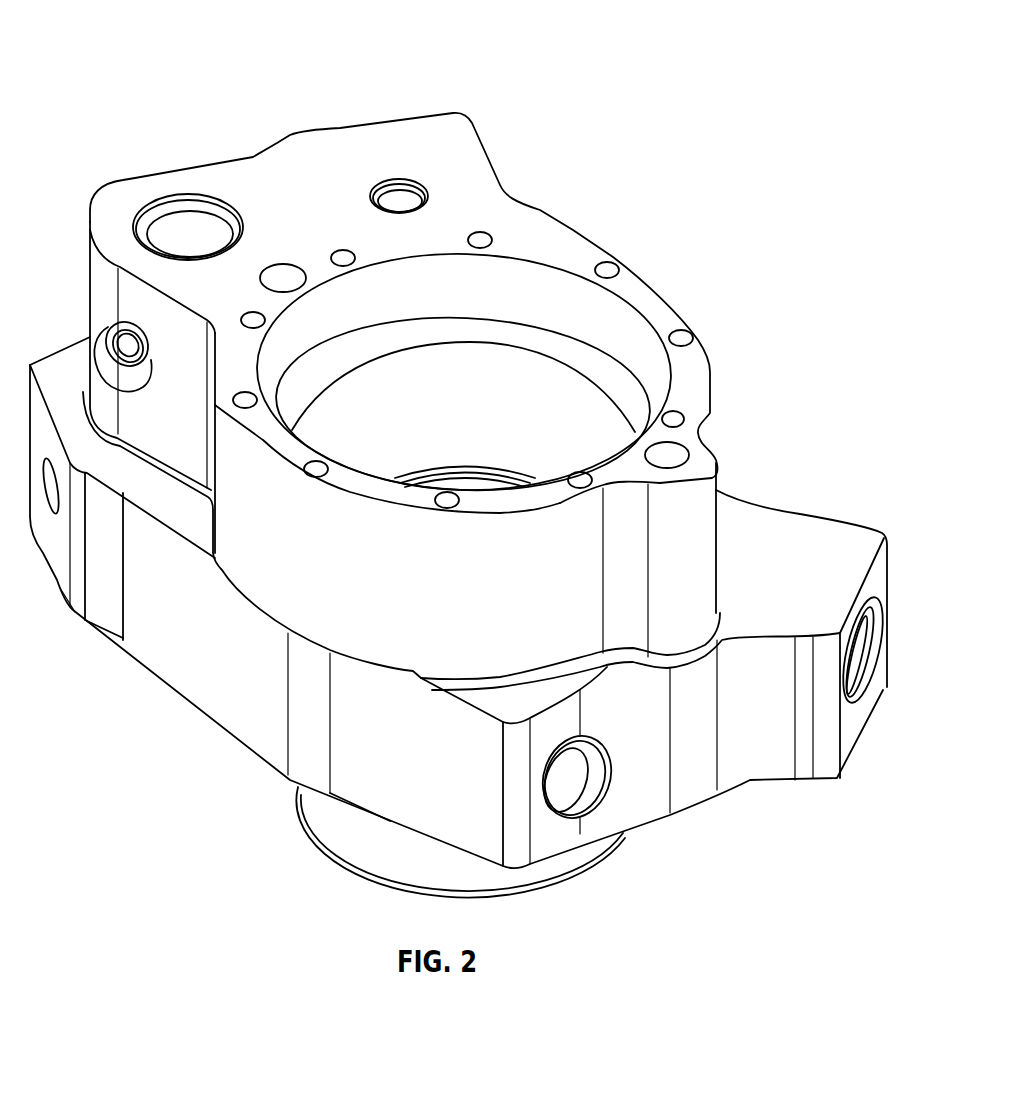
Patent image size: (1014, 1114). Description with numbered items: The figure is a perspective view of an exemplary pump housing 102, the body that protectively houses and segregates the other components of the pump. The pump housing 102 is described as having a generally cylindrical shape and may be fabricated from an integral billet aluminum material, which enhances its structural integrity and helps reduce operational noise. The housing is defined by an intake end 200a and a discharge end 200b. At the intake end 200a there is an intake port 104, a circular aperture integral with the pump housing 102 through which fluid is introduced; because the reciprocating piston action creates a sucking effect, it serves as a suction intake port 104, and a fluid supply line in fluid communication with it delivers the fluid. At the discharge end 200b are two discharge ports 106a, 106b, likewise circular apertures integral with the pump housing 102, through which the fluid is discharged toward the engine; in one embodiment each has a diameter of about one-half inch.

The pump housing 102 is at (468, 455).
The intake port 104 is at (100, 342).
The discharge port 106a is at (560, 787).
The discharge port 106b is at (866, 676).
The intake end 200a is at (480, 178).
The discharge end 200b is at (716, 749).